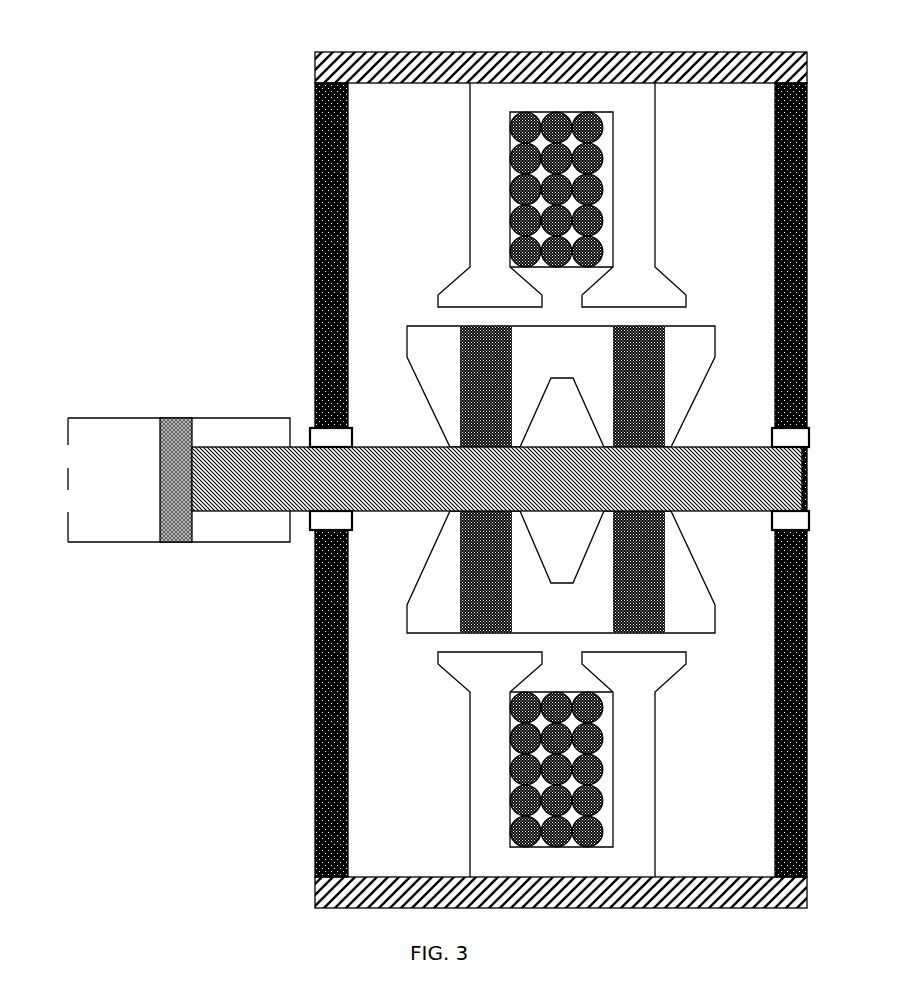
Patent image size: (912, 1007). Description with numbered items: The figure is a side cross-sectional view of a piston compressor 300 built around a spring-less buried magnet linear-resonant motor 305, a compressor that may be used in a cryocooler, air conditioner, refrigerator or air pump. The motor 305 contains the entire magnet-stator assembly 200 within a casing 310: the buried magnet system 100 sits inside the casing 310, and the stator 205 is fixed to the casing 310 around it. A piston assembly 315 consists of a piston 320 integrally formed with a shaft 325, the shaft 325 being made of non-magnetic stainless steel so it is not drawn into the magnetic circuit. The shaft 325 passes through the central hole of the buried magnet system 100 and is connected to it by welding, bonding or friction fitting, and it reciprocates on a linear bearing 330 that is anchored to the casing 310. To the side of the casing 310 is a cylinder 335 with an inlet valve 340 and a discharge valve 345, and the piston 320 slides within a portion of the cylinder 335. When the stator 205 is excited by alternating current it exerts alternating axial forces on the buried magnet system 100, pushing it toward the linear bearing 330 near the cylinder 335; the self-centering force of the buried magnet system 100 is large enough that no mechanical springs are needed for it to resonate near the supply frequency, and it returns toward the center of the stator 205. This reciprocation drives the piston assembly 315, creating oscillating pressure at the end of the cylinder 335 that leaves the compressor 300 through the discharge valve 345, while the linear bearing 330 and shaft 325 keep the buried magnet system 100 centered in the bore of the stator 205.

The buried magnet system 100 is at (692, 320).
The magnet-stator assembly 200 is at (442, 238).
The stator 205 is at (692, 158).
The piston compressor 300 is at (115, 35).
The spring-less buried magnet linear-resonant motor 305 is at (300, 35).
The casing 310 is at (365, 52).
The piston assembly 315 is at (250, 400).
The piston 320 is at (173, 418).
The shaft 325 is at (367, 447).
The linear bearing 330 is at (772, 443).
The cylinder 335 is at (98, 418).
The inlet valve 340 is at (70, 458).
The discharge valve 345 is at (70, 500).